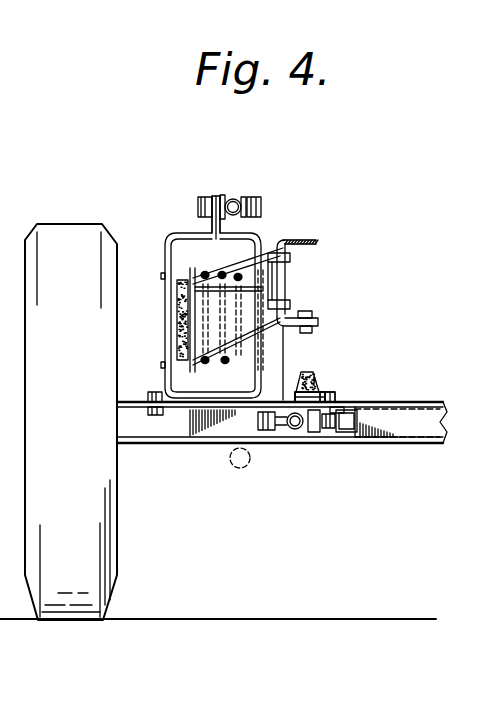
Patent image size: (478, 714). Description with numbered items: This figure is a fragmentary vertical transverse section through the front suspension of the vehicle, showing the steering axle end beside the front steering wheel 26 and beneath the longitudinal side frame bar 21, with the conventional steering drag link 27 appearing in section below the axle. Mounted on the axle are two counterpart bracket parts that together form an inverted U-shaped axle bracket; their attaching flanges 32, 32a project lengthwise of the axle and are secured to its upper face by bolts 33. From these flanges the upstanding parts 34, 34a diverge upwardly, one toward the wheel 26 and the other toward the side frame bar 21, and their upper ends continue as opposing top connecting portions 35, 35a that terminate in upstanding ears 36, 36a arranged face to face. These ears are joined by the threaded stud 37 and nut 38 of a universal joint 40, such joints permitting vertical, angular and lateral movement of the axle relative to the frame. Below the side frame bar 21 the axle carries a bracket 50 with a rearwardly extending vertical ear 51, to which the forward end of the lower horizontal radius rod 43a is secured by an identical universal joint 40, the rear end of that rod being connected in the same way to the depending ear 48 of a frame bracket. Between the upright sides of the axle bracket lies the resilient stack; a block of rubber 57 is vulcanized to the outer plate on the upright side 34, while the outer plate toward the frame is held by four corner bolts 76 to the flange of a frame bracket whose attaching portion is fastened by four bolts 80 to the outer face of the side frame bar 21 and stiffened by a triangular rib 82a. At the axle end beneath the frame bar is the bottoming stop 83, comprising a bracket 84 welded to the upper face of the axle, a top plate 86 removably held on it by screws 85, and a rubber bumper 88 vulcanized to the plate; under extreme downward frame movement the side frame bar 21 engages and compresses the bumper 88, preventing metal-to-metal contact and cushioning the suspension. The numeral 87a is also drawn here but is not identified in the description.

The longitudinal side frame bar 21 is at (300, 238).
The front steering wheel 26 is at (108, 500).
The steering drag link 27 is at (240, 470).
The attaching flange 32 is at (148, 396).
The attaching flange 32a is at (308, 372).
The bolt 33 is at (148, 411).
The upstanding part 34 is at (170, 245).
The upstanding part 34a is at (290, 270).
The top connecting portion 35 is at (185, 232).
The top connecting portion 35a is at (270, 235).
The upstanding ear 36 is at (206, 196).
The upstanding ear 36a is at (233, 196).
The threaded stud 37 is at (217, 190).
The nut 38 is at (200, 210).
The universal joint 40 is at (240, 200).
The lower horizontal radius rod 43a is at (300, 433).
The depending ear 48 is at (280, 440).
The bracket 50 is at (356, 420).
The vertical ear 51 is at (312, 433).
The rubber block 57 is at (176, 270).
The corner bolt 76 is at (200, 368).
The bolt 80 is at (290, 250).
The triangular rib 82a is at (290, 300).
The bottoming stop 83 is at (318, 388).
The bracket 84 is at (330, 401).
The screw 85 is at (310, 397).
The top plate 86 is at (320, 388).
The nut 87a is at (290, 287).
The rubber bumper 88 is at (340, 392).